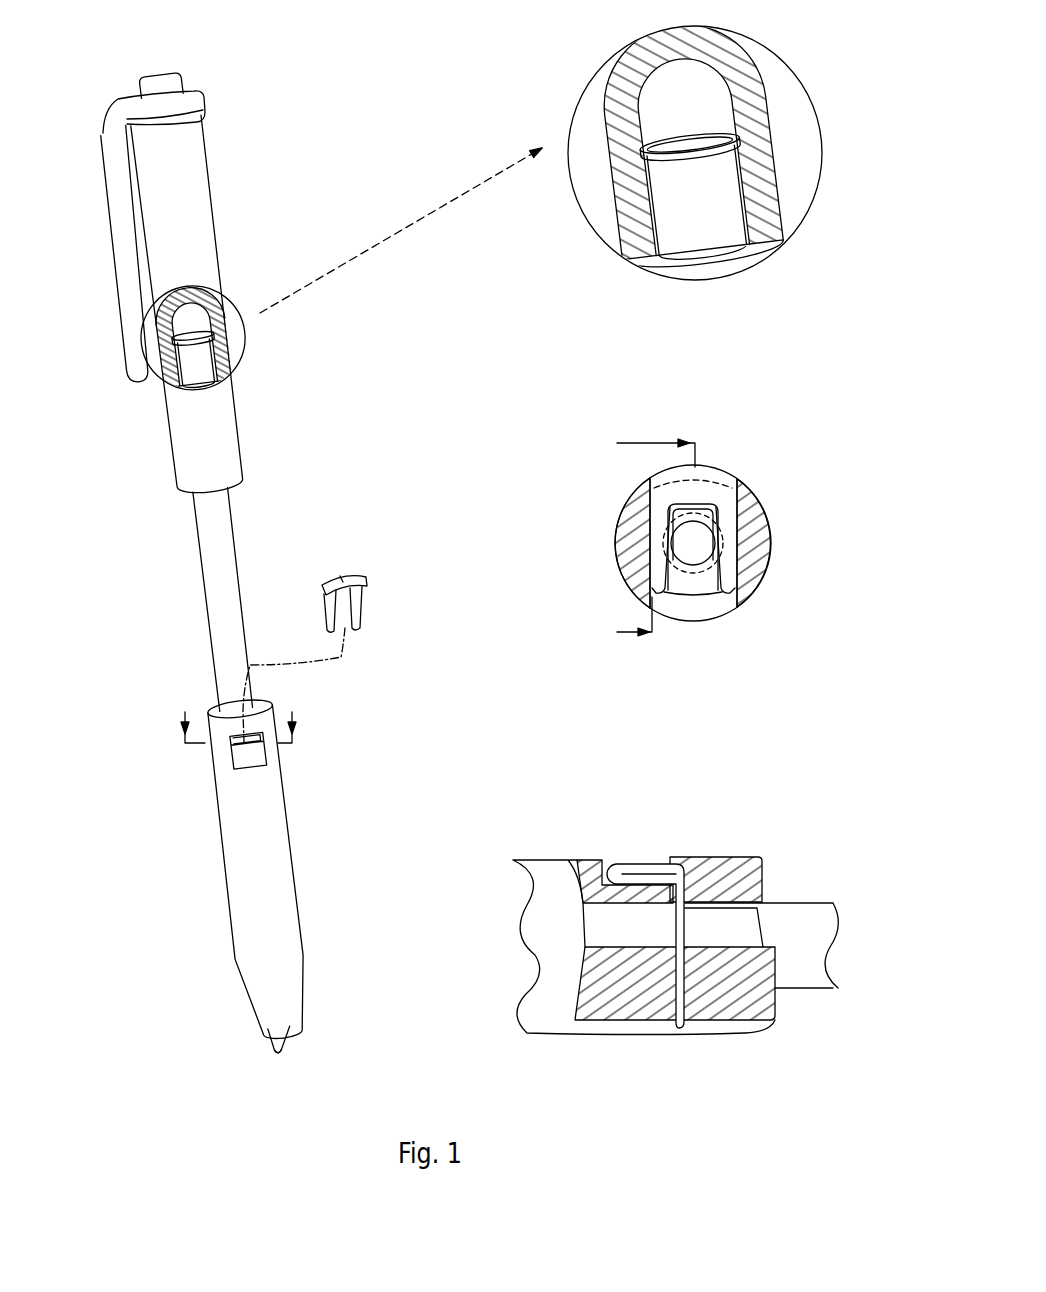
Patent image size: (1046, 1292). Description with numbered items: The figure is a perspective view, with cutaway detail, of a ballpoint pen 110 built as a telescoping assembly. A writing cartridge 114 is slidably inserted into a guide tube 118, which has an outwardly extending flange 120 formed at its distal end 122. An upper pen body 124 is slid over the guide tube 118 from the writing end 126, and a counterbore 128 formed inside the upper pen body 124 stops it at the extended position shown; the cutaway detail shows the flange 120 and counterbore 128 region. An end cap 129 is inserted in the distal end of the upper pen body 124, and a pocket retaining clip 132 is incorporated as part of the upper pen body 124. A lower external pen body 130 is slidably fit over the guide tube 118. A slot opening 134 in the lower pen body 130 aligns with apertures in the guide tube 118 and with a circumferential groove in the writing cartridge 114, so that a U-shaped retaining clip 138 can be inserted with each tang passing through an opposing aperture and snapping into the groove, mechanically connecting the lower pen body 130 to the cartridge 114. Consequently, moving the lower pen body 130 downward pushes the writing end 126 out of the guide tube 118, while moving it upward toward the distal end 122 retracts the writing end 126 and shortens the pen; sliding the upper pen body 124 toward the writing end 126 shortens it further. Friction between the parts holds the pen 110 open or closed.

The ballpoint pen 110 is at (297, 532).
The writing cartridge 114 is at (272, 1053).
The guide tube 118 is at (222, 600).
The outwardly extending flange 120 is at (658, 140).
The distal end 122 is at (157, 65).
The upper pen body 124 is at (180, 200).
The writing end 126 is at (280, 1060).
The counterbore 128 is at (645, 170).
The end cap 129 is at (167, 83).
The lower external pen body 130 is at (240, 833).
The pocket retaining clip 132 is at (124, 207).
The slot opening 134 is at (265, 743).
The retaining clip 138 is at (358, 588).